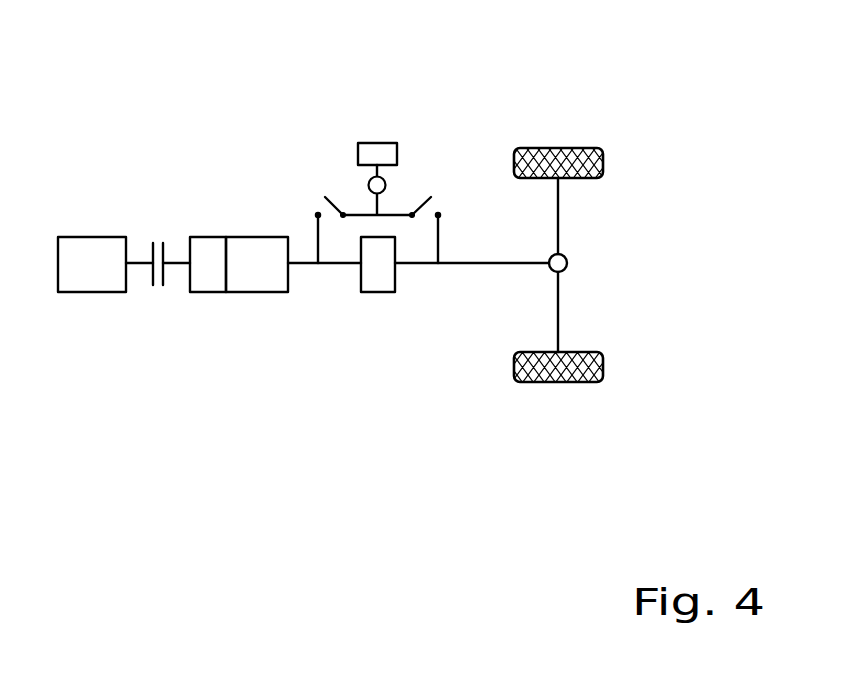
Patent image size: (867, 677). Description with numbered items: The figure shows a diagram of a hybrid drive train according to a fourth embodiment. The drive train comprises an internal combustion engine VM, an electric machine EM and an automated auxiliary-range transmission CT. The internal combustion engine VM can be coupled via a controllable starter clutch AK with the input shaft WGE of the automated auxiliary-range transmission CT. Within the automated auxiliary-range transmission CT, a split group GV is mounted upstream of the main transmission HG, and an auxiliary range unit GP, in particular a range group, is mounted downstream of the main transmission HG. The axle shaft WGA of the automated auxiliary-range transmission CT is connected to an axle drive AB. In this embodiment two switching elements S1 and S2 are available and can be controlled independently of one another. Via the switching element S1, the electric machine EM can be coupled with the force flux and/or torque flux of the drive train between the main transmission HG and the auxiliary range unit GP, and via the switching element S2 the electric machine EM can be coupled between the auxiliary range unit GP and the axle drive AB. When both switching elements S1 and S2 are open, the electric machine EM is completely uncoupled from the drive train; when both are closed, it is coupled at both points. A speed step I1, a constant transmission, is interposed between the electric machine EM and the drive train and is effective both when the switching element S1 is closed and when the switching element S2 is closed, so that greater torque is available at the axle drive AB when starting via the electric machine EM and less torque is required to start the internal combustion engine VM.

The internal combustion engine VM is at (79, 236).
The starter clutch AK is at (156, 243).
The input shaft WGE is at (177, 265).
The split group GV is at (208, 292).
The main transmission HG is at (260, 292).
The auxiliary range unit GP is at (377, 292).
The axle shaft WGA is at (480, 267).
The automated auxiliary-range transmission CT is at (287, 421).
The electric machine EM is at (383, 142).
The speed step I1 is at (370, 183).
The switching element S1 is at (326, 212).
The switching element S2 is at (427, 212).
The axle drive AB is at (560, 156).